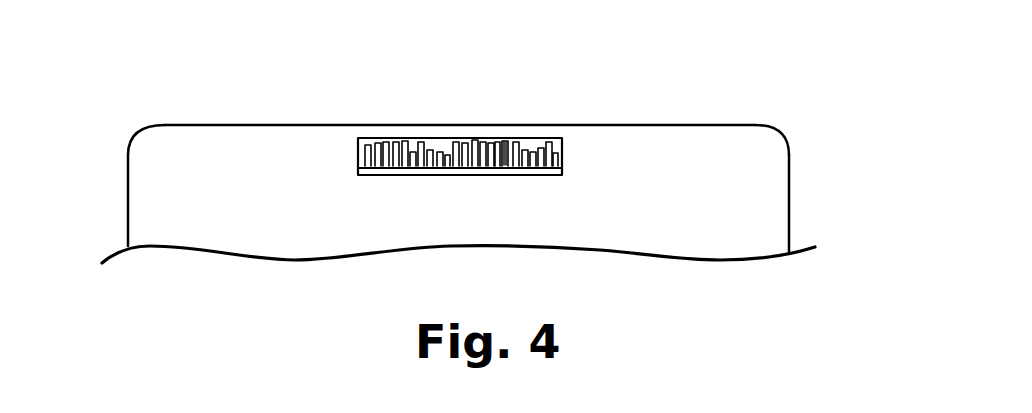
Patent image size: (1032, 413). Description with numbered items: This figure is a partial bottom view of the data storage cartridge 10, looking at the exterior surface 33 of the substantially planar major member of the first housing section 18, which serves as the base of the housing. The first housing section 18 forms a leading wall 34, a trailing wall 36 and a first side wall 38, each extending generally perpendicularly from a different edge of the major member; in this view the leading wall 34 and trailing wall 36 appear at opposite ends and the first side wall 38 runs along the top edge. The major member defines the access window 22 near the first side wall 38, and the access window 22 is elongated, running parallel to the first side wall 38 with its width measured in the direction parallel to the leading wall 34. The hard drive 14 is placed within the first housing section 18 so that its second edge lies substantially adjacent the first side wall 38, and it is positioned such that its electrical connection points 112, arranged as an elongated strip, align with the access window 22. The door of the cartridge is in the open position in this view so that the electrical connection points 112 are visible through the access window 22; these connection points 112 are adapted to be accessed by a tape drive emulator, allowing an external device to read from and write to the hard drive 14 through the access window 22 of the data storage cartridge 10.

The data storage cartridge 10 is at (844, 59).
The hard drive 14 is at (505, 147).
The first housing section 18 is at (772, 235).
The access window 22 is at (377, 140).
The exterior surface 33 is at (752, 136).
The leading wall 34 is at (790, 190).
The trailing wall 36 is at (128, 195).
The first side wall 38 is at (625, 125).
The electrical connection point 112 is at (427, 147).